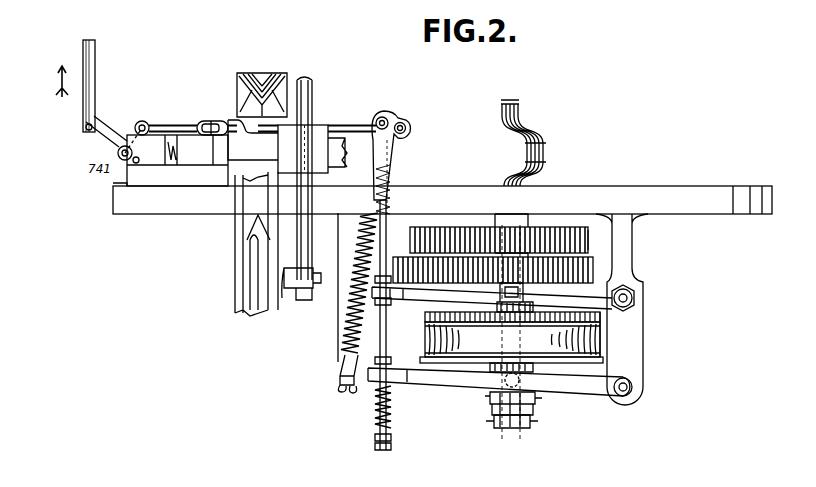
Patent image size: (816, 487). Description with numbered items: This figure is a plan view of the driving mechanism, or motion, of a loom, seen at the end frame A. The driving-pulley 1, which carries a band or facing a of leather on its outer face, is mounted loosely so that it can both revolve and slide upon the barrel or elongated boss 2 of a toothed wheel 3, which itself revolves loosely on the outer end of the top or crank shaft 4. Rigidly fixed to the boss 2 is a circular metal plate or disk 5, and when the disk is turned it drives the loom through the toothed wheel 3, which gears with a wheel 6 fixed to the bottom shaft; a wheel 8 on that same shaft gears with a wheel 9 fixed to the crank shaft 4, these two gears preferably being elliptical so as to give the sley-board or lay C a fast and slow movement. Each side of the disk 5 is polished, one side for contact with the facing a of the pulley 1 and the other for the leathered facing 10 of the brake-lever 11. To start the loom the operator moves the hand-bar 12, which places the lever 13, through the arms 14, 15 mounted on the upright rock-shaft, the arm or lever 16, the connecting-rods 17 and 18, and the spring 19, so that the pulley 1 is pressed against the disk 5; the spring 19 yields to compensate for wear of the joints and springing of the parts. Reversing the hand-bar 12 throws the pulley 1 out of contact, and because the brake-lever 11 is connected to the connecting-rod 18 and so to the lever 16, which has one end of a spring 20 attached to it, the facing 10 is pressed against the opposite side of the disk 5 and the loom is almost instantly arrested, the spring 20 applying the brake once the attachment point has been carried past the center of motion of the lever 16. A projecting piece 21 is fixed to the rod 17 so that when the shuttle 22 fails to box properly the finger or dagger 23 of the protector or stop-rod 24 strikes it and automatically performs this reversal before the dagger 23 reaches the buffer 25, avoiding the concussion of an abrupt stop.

The driving-pulley 1 is at (55, 81).
The barrel or elongated boss 2 is at (497, 296).
The toothed wheel 3 is at (594, 263).
The top or crank shaft 4 is at (523, 143).
The circular metal plate or disk 5 is at (602, 322).
The wheel 6 is at (493, 261).
The wheel 8 is at (430, 230).
The wheel 9 is at (593, 239).
The leathered facing of the brake-lever 10 is at (572, 290).
The brake-lever 11 is at (492, 298).
The hand-bar 12 is at (100, 86).
The lever 13 is at (499, 382).
The arm 14 is at (112, 139).
The arm 15 is at (138, 126).
The arm or lever 16 is at (390, 117).
The connecting-rod 17 is at (262, 120).
The connecting-rod 18 is at (390, 160).
The spring 19 is at (392, 420).
The spring 20 is at (345, 350).
The projecting piece 21 is at (211, 120).
The shuttle 22 is at (256, 244).
The finger or dagger 23 is at (253, 140).
The protector or stop-rod 24 is at (312, 188).
The buffer 25 is at (177, 160).
The end frame A is at (442, 198).
The sley-board or lay C is at (262, 87).
The band or facing a is at (430, 324).